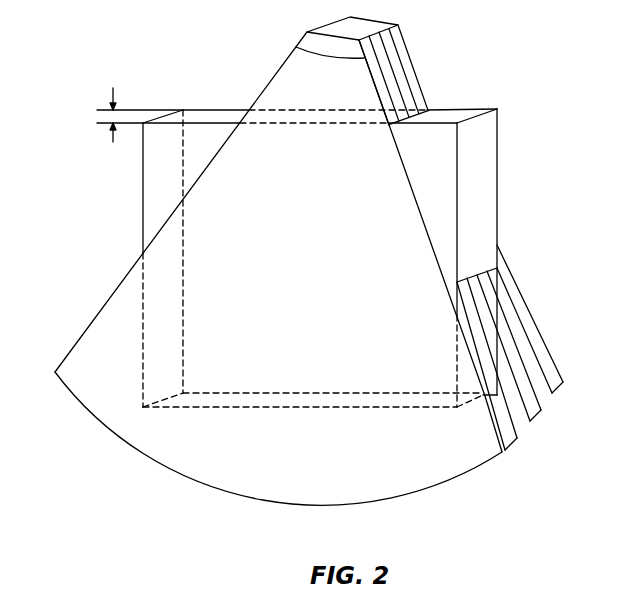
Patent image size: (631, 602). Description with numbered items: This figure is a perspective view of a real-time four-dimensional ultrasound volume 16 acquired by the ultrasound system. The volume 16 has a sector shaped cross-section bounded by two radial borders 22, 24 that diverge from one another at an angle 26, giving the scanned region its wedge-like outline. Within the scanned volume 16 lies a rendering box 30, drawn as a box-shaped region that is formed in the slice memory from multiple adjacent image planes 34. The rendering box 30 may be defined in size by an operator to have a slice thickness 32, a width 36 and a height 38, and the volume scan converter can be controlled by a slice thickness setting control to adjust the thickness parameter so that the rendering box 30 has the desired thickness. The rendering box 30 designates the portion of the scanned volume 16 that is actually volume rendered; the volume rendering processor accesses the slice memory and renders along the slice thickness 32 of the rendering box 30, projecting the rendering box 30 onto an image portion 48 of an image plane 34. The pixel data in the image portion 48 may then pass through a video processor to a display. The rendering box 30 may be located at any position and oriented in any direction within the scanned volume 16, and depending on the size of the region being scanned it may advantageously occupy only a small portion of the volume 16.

The real-time 4D volume 16 is at (617, 423).
The radial border 22 is at (260, 101).
The radial border 24 is at (386, 83).
The angle 26 is at (335, 58).
The rendering box 30 is at (287, 385).
The slice thickness 32 is at (110, 114).
The image planes 34 is at (562, 385).
The width 36 is at (358, 409).
The height 38 is at (140, 323).
The image portion 48 is at (212, 228).